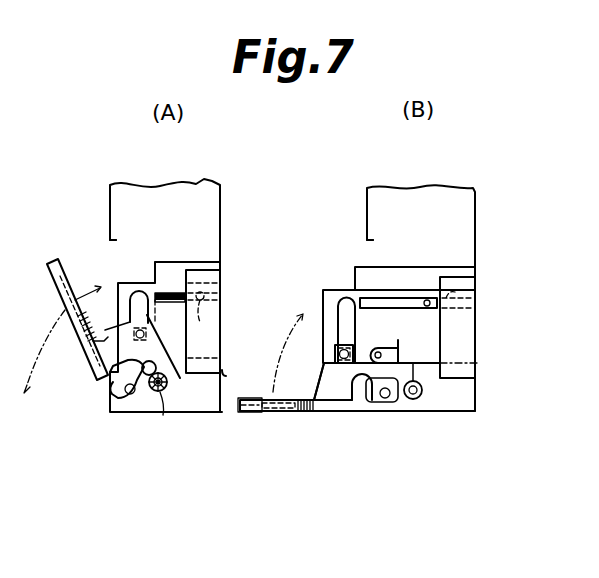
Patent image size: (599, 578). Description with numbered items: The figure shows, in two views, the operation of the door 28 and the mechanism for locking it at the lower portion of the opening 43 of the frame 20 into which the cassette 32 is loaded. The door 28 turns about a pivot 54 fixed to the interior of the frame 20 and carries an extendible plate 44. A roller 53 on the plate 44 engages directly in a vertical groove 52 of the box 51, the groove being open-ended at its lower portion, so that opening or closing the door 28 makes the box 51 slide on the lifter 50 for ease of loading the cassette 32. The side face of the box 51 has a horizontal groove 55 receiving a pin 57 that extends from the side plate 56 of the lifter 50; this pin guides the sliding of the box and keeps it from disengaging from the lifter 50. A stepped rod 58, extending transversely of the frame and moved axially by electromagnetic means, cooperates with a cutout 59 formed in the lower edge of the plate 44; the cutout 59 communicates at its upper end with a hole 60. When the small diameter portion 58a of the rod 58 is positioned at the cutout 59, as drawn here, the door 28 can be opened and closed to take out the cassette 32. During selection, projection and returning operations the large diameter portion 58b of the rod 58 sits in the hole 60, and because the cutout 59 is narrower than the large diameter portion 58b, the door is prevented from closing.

In FIG. 7A, the frame 20 is at (110, 196).
In FIG. 7B, the frame 20 is at (367, 195).
In FIG. 7A, the opening 43 is at (110, 238).
In FIG. 7B, the opening 43 is at (367, 238).
In FIG. 7A, the box 51 is at (126, 283).
In FIG. 7B, the box 51 is at (346, 291).
In FIG. 7A, the cassette 32 is at (154, 268).
In FIG. 7B, the cassette 32 is at (401, 273).
In FIG. 7A, the horizontal groove 55 is at (172, 295).
In FIG. 7B, the horizontal groove 55 is at (428, 300).
In FIG. 7A, the pin 57 is at (203, 321).
In FIG. 7B, the pin 57 is at (473, 299).
In FIG. 7A, the side plate 56 is at (221, 318).
In FIG. 7B, the side plate 56 is at (476, 336).
In FIG. 7A, the roller 53 is at (170, 311).
In FIG. 7B, the roller 53 is at (335, 351).
In FIG. 7A, the vertical groove 52 is at (130, 306).
In FIG. 7B, the vertical groove 52 is at (338, 308).
In FIG. 7A, the cutout 59 is at (178, 383).
In FIG. 7B, the cutout 59 is at (399, 344).
In FIG. 7A, the extendible plate 44 is at (90, 347).
In FIG. 7B, the extendible plate 44 is at (316, 381).
In FIG. 7A, the door 28 is at (54, 281).
In FIG. 7B, the door 28 is at (307, 412).
In FIG. 7A, the pivot 54 is at (112, 392).
In FIG. 7B, the pivot 54 is at (385, 399).
In FIG. 7A, the hole 60 is at (147, 378).
In FIG. 7B, the hole 60 is at (375, 350).
In FIG. 7A, the stepped rod 58 is at (168, 392).
In FIG. 7B, the stepped rod 58 is at (418, 359).
In FIG. 7A, the small diameter portion 58a is at (162, 410).
In FIG. 7B, the small diameter portion 58a is at (414, 400).
In FIG. 7B, the large diameter portion 58b is at (422, 391).
In FIG. 7A, the lifter 50 is at (223, 376).